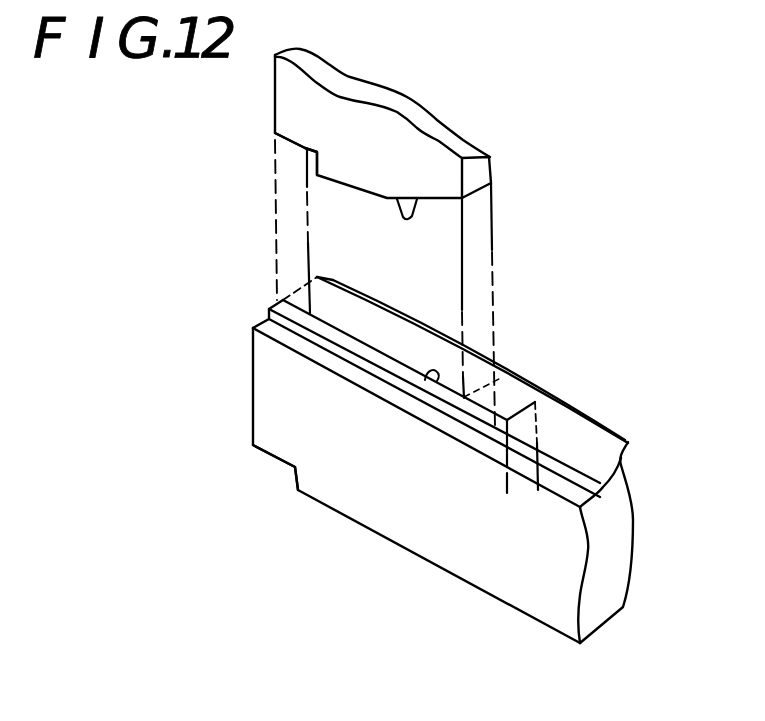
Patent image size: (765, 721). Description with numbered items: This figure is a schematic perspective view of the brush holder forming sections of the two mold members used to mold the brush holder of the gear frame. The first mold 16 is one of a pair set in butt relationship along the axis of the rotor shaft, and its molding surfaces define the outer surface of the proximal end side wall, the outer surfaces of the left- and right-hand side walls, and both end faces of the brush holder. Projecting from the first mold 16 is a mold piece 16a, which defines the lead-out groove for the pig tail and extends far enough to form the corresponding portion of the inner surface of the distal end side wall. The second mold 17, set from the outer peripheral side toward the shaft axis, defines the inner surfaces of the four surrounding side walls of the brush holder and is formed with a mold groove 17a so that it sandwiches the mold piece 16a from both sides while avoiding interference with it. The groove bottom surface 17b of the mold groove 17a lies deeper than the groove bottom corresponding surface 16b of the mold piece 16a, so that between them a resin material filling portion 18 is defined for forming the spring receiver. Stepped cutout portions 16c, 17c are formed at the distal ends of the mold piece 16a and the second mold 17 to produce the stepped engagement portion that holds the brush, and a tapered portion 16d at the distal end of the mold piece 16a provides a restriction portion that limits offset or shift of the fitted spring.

The first mold 16 is at (490, 108).
The mold piece 16a is at (293, 102).
The groove bottom corresponding surface 16b is at (488, 163).
The stepped cutout portion 16c is at (295, 147).
The tapered portion 16d is at (419, 198).
The second mold 17 is at (404, 531).
The mold groove 17a is at (427, 379).
The groove bottom surface 17b is at (540, 384).
The stepped cutout portion 17c is at (278, 462).
The resin material filling portion 18 is at (520, 402).